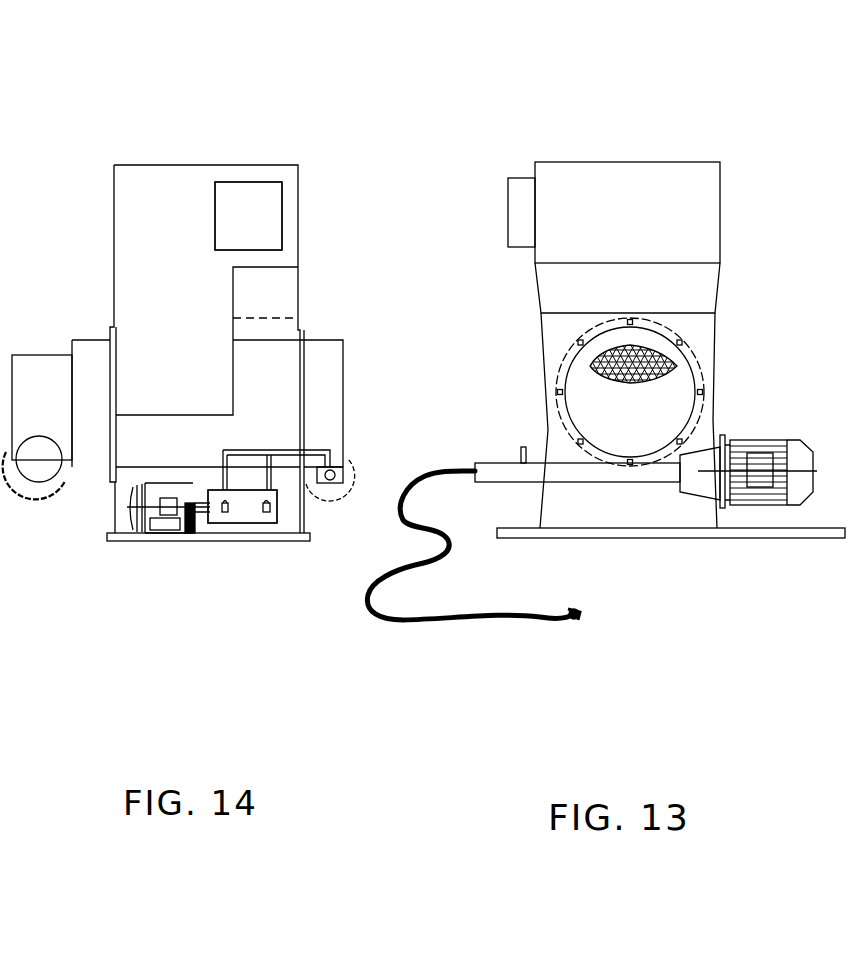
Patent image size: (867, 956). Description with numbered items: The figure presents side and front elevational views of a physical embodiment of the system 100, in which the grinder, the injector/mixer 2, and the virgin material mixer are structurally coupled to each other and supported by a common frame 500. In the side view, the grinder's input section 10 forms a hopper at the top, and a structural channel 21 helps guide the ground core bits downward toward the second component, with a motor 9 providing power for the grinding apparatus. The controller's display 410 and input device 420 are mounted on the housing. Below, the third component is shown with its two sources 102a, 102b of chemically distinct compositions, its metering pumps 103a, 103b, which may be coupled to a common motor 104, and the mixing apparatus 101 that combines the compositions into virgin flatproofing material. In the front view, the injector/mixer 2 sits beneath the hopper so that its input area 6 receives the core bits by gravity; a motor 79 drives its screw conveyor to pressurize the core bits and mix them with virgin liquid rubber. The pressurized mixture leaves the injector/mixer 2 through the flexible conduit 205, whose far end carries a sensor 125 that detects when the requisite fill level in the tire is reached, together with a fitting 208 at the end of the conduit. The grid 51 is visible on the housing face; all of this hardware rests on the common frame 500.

In FIG. 14, the system 100 is at (182, 78).
In FIG. 13, the system 100 is at (608, 70).
In FIG. 14, the display 410 is at (262, 202).
In FIG. 14, the input device 420 is at (248, 216).
In FIG. 14, the structural channel 21 is at (345, 381).
In FIG. 14, the mixing apparatus 101 is at (317, 447).
In FIG. 14, the motor 9 is at (29, 495).
In FIG. 14, the common motor 104 is at (128, 506).
In FIG. 14, the common frame 500 is at (123, 543).
In FIG. 13, the common frame 500 is at (812, 538).
In FIG. 14, the source 102a is at (227, 523).
In FIG. 14, the source 102b is at (265, 523).
In FIG. 14, the metering pump 103a is at (267, 523).
In FIG. 14, the metering pump 103b is at (242, 506).
In FIG. 13, the input section 10 is at (637, 213).
In FIG. 13, the grid 51 is at (675, 366).
In FIG. 13, the motor 79 is at (757, 440).
In FIG. 13, the input area 6 is at (512, 462).
In FIG. 13, the injector/mixer 2 is at (627, 487).
In FIG. 13, the conduit 205 is at (557, 623).
In FIG. 13, the sensor 125 is at (583, 608).
In FIG. 13, the coupling 208 is at (583, 617).